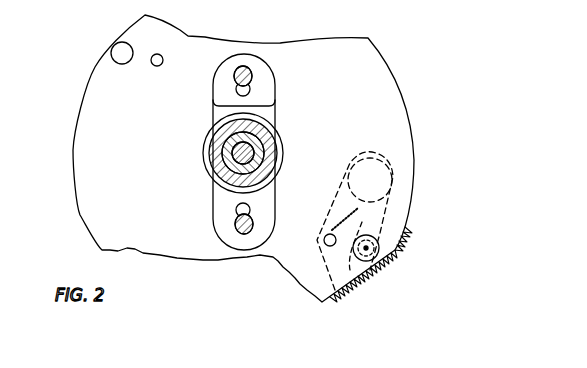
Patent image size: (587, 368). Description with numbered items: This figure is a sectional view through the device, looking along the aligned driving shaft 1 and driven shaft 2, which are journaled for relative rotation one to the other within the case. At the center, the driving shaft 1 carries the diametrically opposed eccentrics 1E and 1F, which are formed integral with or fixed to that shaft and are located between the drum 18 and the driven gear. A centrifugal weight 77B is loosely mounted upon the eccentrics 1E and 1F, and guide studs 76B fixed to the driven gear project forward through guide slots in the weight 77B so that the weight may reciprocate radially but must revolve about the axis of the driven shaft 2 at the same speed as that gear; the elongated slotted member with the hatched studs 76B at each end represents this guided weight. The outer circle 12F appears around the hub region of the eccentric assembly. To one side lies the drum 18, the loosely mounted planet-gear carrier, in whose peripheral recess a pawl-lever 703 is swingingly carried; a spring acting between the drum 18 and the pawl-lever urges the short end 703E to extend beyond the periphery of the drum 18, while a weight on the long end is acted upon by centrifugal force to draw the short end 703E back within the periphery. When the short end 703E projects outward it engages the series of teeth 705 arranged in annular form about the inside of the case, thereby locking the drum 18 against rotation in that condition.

The driving shaft 1 is at (277, 112).
The eccentric 1E is at (258, 128).
The eccentric 1F is at (268, 180).
The driven shaft 2 is at (242, 148).
The outer bearing circle 12F is at (217, 183).
The drum 18 is at (307, 298).
The guide studs 76B is at (233, 78).
The centrifugal weights 77B is at (272, 78).
The pawl-levers 703 is at (350, 175).
The short ends of pawl-levers 703E is at (353, 268).
The teeth 705 is at (388, 270).